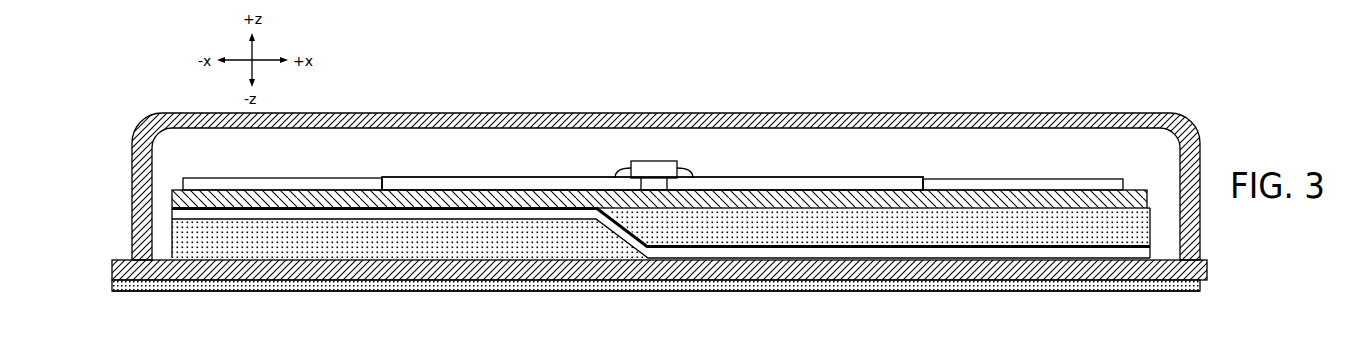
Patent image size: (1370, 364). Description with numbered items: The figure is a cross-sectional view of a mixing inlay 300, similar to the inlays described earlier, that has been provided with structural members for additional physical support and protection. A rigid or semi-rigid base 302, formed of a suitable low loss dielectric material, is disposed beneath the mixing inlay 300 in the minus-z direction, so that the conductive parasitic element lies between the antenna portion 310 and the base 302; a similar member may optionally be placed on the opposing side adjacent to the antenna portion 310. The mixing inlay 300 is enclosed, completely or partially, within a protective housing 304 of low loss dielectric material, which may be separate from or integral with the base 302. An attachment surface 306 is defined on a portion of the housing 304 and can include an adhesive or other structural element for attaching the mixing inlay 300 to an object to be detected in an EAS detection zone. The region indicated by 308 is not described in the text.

The mixing inlay 300 is at (1098, 157).
The base 302 is at (1207, 271).
The housing 304 is at (1199, 128).
The attachment surface 306 is at (1025, 280).
The bottom surface 308 is at (735, 305).
The antenna portion 310 is at (771, 177).